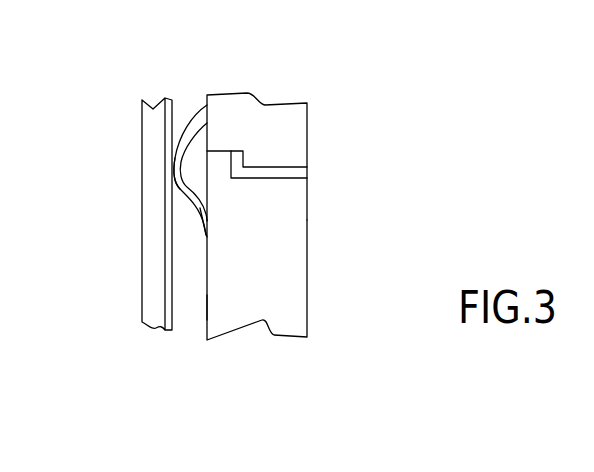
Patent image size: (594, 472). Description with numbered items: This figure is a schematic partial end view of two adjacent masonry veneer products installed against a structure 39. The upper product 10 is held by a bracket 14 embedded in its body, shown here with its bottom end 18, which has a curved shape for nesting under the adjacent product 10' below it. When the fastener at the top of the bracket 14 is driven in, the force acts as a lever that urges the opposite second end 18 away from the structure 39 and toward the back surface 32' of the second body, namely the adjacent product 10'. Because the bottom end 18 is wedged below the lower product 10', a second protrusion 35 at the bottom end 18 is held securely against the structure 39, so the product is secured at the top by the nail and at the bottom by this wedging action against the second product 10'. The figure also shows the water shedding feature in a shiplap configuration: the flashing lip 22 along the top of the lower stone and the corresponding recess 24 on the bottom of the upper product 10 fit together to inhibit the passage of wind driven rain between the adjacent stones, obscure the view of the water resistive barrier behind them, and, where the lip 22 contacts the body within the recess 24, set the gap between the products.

The masonry veneer product 10 is at (307, 155).
The adjacent masonry veneer product 10' is at (314, 280).
The bracket 14 is at (189, 88).
The bottom end of bracket 18 is at (206, 236).
The flashing lip 22 is at (218, 152).
The recess 24 is at (233, 150).
The back surface of second body 32' is at (183, 328).
The second protrusion 35 is at (173, 168).
The structure 39 is at (150, 142).